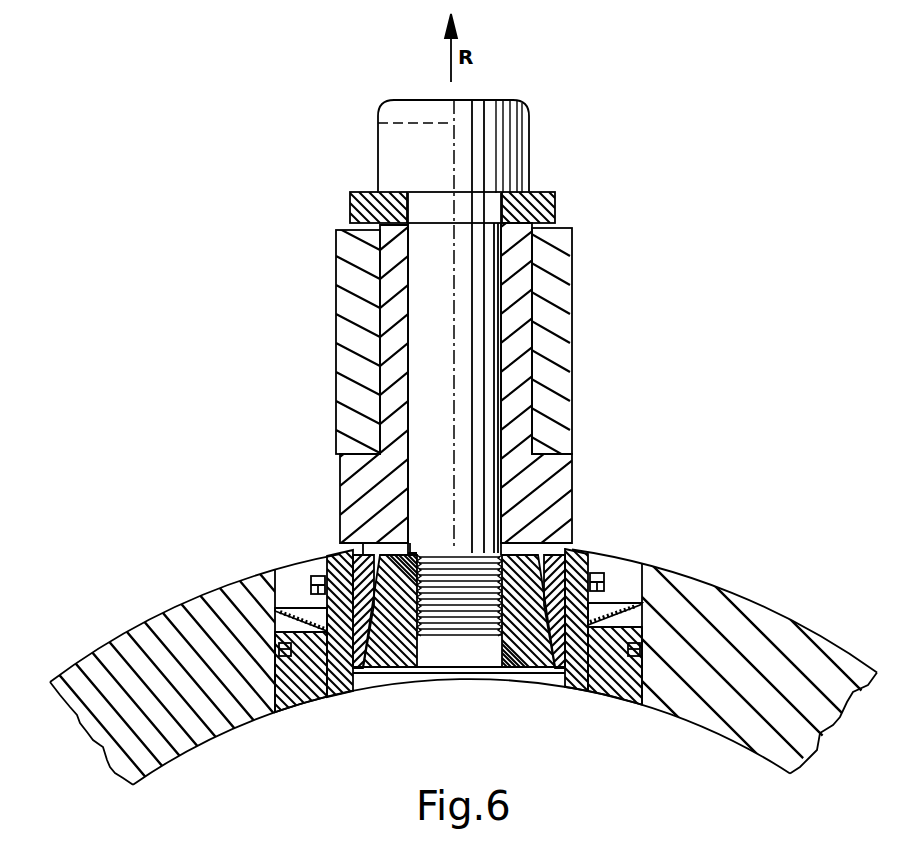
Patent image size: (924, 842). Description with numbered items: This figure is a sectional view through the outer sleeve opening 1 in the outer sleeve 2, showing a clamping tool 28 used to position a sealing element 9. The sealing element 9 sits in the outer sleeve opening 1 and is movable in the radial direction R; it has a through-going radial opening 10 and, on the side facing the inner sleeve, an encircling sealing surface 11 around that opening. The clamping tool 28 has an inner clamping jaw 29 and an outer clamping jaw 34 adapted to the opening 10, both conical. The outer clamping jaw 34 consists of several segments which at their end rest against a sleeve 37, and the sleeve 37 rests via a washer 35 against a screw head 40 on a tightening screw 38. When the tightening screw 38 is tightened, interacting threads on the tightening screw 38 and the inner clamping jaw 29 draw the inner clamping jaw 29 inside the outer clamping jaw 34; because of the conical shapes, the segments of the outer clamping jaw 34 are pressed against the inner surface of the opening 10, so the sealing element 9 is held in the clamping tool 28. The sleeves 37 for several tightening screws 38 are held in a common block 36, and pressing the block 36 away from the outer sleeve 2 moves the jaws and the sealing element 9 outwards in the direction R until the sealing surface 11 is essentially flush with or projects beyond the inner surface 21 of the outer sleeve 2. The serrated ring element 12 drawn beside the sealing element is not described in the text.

The outer sleeve opening 1 is at (320, 532).
The through-going radial opening 10 is at (455, 611).
The outer sleeve 2 is at (773, 625).
The sealing element 9 is at (606, 662).
The sealing surface 11 is at (587, 687).
The locking wedge ring 12 is at (598, 607).
The inner surface of the outer sleeve 21 is at (720, 728).
The clamping tool 28 is at (520, 332).
The inner clamping jaw 29 is at (540, 633).
The outer clamping jaw 34 is at (397, 660).
The washer 35 is at (553, 207).
The common block 36 is at (550, 275).
The sleeve 37 is at (522, 393).
The tightening screw 38 is at (480, 434).
The screw head 40 is at (527, 152).